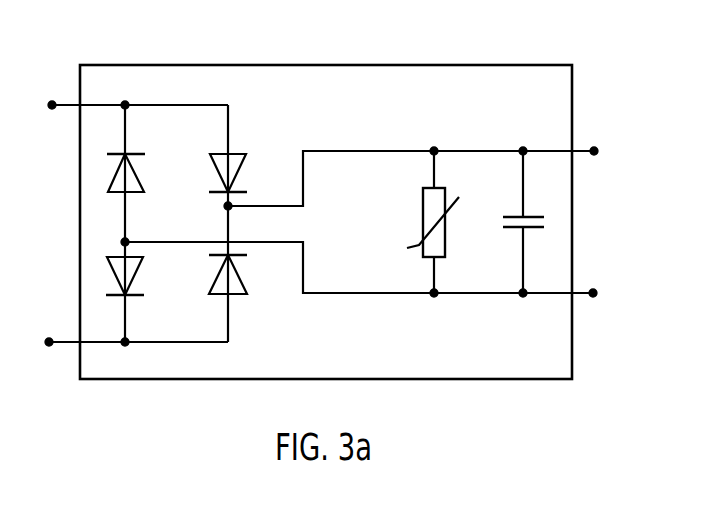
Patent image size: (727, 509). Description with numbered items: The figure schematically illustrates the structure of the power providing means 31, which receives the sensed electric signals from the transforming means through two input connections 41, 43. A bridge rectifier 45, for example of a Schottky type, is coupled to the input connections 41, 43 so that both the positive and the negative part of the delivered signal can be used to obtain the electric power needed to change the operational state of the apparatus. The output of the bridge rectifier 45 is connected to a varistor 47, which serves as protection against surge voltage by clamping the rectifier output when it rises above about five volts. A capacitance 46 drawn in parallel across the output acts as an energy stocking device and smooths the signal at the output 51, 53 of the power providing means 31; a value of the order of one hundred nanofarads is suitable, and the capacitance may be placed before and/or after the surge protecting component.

The power providing means 31 is at (287, 65).
The input connection 41 is at (52, 103).
The input connection 43 is at (49, 346).
The bridge rectifier 45 is at (177, 100).
The capacitor 46 is at (523, 190).
The varistor 47 is at (423, 198).
The output 51 is at (594, 150).
The output 53 is at (593, 297).